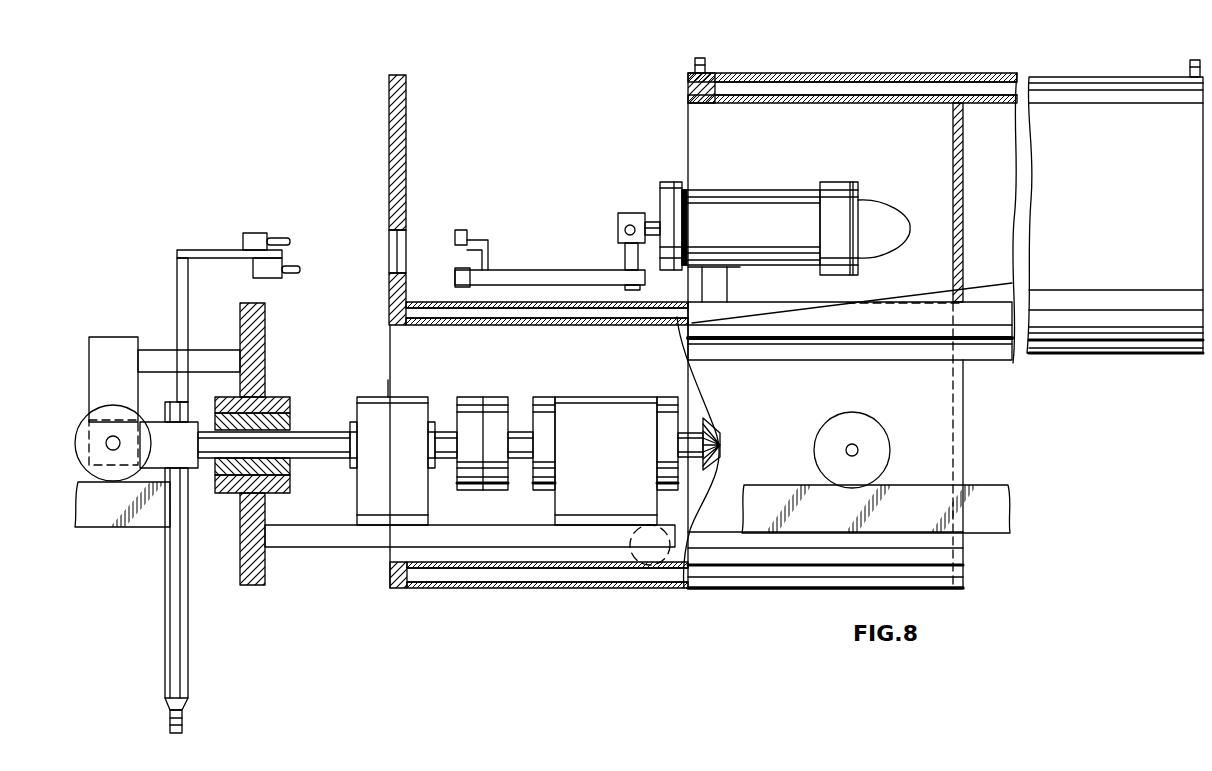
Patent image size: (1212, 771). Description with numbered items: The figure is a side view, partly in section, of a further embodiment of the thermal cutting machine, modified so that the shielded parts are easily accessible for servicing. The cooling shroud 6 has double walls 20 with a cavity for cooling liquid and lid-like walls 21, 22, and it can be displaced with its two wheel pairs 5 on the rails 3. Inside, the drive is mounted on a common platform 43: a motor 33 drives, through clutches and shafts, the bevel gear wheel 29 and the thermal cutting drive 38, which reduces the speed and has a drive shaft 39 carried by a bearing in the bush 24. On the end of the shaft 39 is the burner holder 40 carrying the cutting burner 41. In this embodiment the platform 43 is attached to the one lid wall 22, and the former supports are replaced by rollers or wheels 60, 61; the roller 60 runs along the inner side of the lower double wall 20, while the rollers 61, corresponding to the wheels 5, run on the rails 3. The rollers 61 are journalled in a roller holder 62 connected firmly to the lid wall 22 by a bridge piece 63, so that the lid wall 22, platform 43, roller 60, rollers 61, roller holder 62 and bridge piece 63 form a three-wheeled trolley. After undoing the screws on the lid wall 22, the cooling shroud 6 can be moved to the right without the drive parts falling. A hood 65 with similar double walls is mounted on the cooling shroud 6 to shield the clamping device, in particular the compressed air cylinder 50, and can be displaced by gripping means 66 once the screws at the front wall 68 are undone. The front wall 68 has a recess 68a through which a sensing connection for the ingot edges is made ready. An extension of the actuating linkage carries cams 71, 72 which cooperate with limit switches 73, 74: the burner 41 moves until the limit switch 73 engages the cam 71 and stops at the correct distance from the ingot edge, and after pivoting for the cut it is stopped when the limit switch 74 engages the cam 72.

The rails 3 is at (92, 515).
The wheels 5 is at (870, 430).
The cooling shroud 6 is at (437, 592).
The double walls 20 is at (513, 575).
The lid-like wall 21 is at (958, 432).
The lid wall 22 is at (263, 380).
The bush 24 is at (225, 482).
The bevel gear wheel 29 is at (716, 436).
The motor 33 is at (552, 410).
The thermal cutting drive 38 is at (410, 410).
The drive shaft 39 is at (308, 435).
The burner holder 40 is at (173, 452).
The cutting burner 41 is at (175, 578).
The platform 43 is at (320, 540).
The compressed air cylinder 50 is at (665, 206).
The roller 60 is at (648, 565).
The rollers 61 is at (83, 430).
The roller holder 62 is at (115, 340).
The bridge piece 63 is at (158, 358).
The hood 65 is at (1072, 107).
The gripping means 66 is at (704, 64).
The front wall 68 is at (406, 196).
The recess 68a is at (394, 243).
The cam 71 is at (456, 271).
The cam 72 is at (463, 234).
The limit switch 73 is at (270, 272).
The limit switch 74 is at (258, 235).